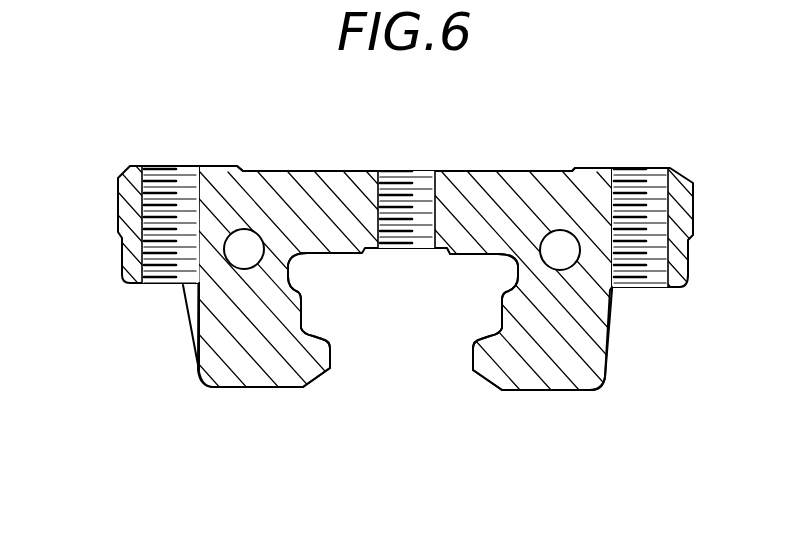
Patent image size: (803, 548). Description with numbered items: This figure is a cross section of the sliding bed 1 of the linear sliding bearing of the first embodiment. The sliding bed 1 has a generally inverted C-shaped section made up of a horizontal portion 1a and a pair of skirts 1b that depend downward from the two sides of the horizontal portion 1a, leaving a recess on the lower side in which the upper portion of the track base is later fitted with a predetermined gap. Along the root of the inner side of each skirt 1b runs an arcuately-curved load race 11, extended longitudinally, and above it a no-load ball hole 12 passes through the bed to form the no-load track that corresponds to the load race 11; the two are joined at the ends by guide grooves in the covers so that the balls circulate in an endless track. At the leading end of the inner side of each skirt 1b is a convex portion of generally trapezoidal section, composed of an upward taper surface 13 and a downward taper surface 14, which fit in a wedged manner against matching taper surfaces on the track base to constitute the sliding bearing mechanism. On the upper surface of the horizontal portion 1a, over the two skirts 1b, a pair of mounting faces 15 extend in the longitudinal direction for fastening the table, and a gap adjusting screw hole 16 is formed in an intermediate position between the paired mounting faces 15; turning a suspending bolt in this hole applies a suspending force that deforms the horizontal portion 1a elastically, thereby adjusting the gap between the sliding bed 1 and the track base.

The sliding bed 1 is at (491, 172).
The horizontal portion 1a is at (346, 183).
The skirts 1b is at (238, 362).
The load race 11 is at (298, 273).
The no-load ball hole 12 is at (248, 240).
The upward taper surface 13 is at (317, 340).
The downward taper surface 14 is at (318, 382).
The mounting faces 15 is at (215, 167).
The gap adjusting screw hole 16 is at (411, 173).